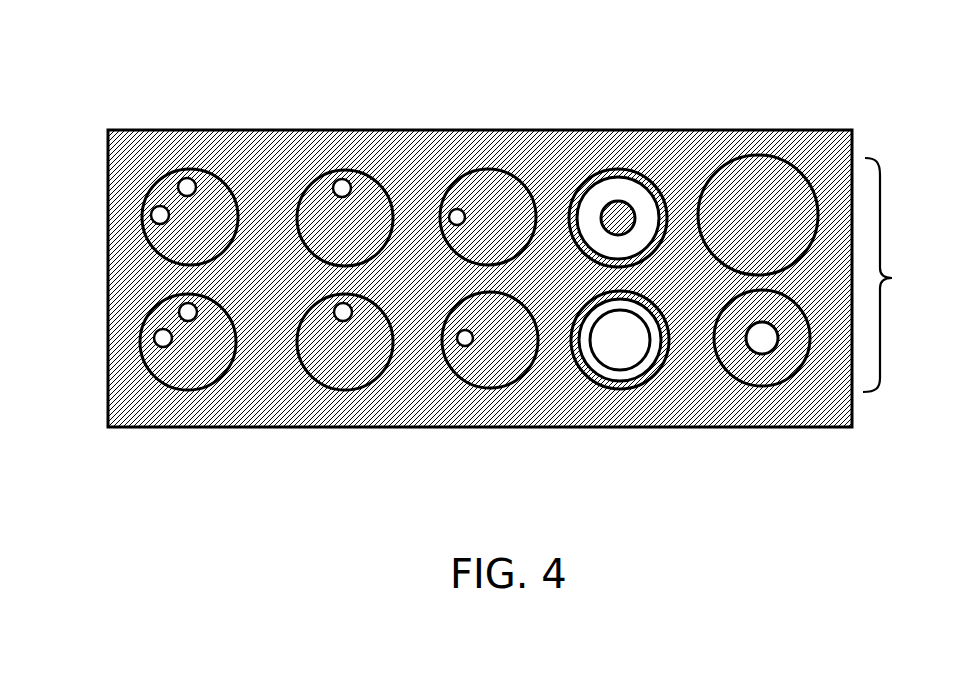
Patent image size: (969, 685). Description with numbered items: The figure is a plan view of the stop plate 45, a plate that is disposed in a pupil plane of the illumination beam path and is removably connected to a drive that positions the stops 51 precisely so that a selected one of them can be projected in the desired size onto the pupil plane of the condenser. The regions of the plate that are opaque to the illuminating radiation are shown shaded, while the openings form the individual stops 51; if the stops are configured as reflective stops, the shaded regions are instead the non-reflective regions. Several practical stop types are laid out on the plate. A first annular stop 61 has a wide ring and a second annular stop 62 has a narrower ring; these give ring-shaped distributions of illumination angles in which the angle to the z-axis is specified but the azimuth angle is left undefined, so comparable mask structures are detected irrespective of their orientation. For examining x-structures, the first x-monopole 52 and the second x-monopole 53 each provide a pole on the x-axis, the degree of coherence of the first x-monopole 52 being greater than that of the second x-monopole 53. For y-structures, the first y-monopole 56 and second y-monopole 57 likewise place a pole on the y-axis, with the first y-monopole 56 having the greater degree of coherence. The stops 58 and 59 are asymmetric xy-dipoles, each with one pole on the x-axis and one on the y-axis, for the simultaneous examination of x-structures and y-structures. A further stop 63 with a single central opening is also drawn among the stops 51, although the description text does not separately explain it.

The stop plate 45 is at (171, 105).
The stops 51 is at (894, 275).
The first x-monopole 52 is at (493, 187).
The second x-monopole 53 is at (497, 365).
The first y-monopole 56 is at (362, 200).
The second y-monopole 57 is at (323, 362).
The asymmetric xy-dipole stop 58 is at (165, 198).
The asymmetric xy-dipole stop 59 is at (168, 318).
The first annular stop 61 is at (613, 170).
The second annular stop 62 is at (595, 387).
The aperture with central hole 63 is at (772, 372).